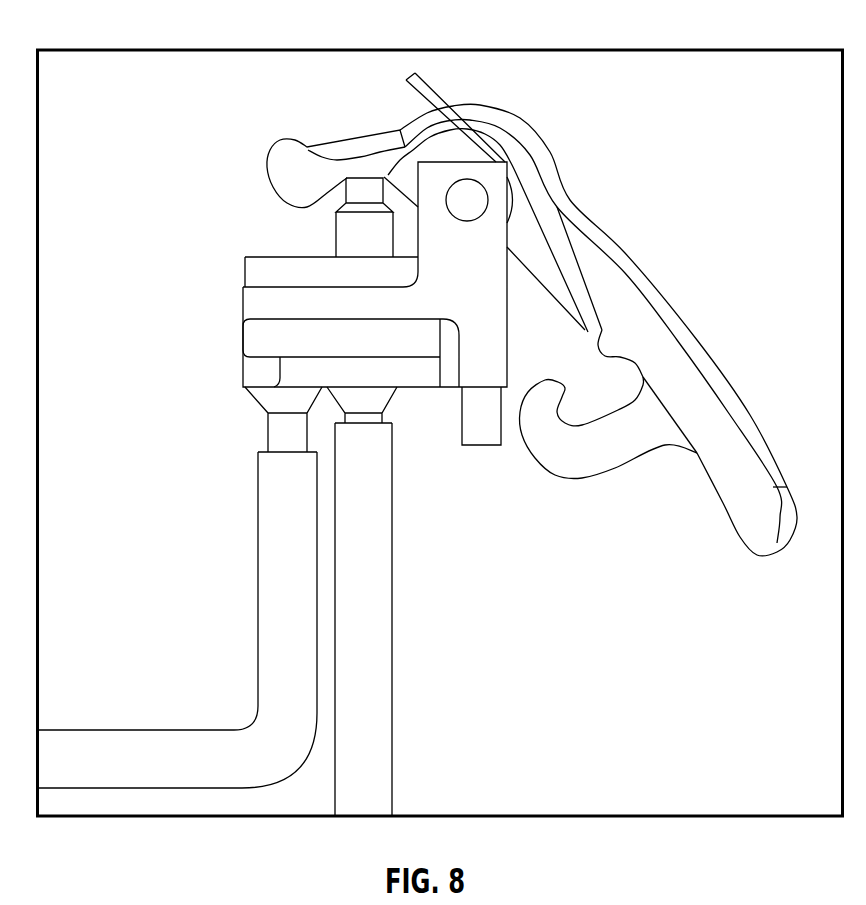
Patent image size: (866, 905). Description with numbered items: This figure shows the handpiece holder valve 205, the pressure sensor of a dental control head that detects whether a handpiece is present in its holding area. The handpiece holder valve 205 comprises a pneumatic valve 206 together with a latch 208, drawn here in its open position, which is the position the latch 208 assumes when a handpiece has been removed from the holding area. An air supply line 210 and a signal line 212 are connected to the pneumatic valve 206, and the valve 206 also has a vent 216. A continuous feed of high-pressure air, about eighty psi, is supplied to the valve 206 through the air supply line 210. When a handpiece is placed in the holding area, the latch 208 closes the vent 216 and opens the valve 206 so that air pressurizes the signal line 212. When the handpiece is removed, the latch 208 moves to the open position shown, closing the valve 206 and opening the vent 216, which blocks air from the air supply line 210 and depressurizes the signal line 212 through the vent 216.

The handpiece holder valve 205 is at (107, 30).
The pneumatic valve 206 is at (258, 338).
The latch 208 is at (703, 403).
The air supply line 210 is at (373, 525).
The signal line 212 is at (270, 620).
The vent 216 is at (492, 427).